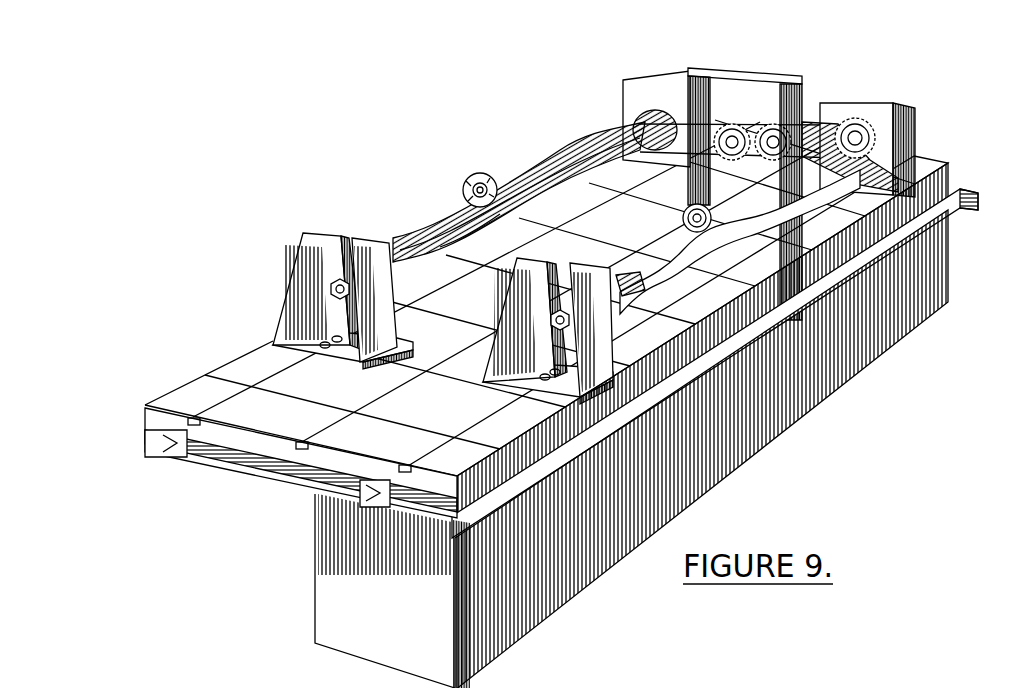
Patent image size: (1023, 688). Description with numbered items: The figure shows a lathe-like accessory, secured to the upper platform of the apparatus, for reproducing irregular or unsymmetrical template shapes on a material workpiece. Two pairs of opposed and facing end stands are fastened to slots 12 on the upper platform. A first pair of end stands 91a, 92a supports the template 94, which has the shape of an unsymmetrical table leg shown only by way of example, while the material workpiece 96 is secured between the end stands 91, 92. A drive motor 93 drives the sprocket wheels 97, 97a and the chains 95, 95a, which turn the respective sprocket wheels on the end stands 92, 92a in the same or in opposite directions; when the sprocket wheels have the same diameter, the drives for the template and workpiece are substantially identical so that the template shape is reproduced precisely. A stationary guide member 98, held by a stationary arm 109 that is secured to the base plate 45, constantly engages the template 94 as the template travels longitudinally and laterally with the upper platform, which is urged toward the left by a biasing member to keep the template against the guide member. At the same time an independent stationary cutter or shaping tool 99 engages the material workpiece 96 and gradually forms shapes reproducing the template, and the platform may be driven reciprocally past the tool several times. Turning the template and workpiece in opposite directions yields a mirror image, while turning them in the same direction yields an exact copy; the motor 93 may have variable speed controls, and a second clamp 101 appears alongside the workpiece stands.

The slots 12 is at (407, 490).
The base plate 45 is at (858, 268).
The end stand 91 is at (323, 285).
The end stand 91a is at (473, 210).
The end stand 92 is at (658, 93).
The end stand 92a is at (905, 129).
The drive motor 93 is at (813, 100).
The template 94 is at (913, 240).
The chain 95 is at (682, 107).
The chain 95a is at (840, 123).
The material workpiece 96 is at (607, 137).
The sprocket wheel 97 is at (743, 123).
The sprocket wheel 97a is at (767, 123).
The guide member 98 is at (788, 240).
The shaping tool 99 is at (500, 168).
The right clamping bracket 101 is at (556, 316).
The stationary arm 109 is at (717, 70).